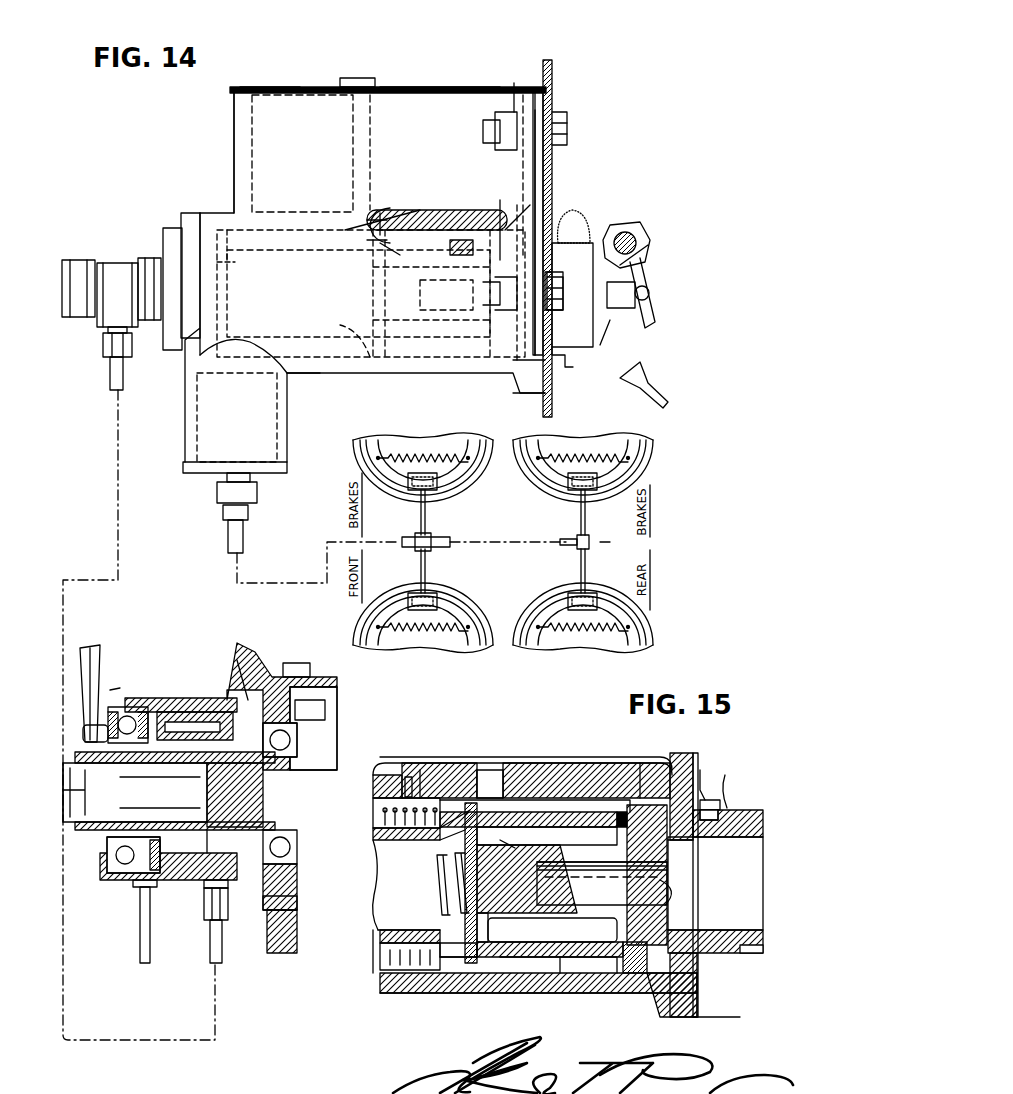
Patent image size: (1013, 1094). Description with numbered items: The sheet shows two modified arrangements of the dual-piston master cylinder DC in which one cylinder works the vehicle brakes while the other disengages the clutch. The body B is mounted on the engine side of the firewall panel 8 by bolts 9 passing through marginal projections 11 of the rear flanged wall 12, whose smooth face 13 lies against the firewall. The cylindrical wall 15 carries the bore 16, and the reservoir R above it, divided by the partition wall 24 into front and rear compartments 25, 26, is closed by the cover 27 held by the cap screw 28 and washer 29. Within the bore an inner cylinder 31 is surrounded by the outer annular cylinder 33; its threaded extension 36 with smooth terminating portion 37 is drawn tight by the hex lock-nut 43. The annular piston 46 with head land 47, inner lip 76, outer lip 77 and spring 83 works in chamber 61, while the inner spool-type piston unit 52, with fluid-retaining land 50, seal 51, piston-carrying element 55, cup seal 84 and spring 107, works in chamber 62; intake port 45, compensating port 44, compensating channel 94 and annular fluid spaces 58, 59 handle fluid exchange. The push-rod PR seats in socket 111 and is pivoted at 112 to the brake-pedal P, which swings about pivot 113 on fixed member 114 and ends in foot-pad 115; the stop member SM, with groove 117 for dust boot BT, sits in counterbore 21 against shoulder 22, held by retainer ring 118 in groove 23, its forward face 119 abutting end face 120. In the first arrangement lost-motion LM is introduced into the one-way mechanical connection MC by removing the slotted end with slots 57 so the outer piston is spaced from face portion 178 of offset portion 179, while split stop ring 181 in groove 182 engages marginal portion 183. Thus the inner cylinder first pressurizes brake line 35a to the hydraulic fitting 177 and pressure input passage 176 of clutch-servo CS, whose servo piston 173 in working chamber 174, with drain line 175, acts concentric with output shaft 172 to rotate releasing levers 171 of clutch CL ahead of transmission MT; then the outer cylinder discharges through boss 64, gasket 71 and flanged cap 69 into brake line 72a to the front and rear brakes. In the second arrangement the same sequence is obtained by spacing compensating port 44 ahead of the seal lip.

In FIG. 14, the fluid supply reservoir R is at (388, 221).
In FIG. 15, the fluid supply reservoir R is at (597, 755).
In FIG. 14, the removable cover 27 is at (272, 72).
In FIG. 14, the cap screw 28 is at (352, 78).
In FIG. 14, the washer 29 is at (395, 80).
In FIG. 14, the body B is at (233, 158).
In FIG. 15, the body B is at (388, 1012).
In FIG. 14, the firewall panel 8 is at (552, 72).
In FIG. 14, the marginal projections 11 is at (508, 110).
In FIG. 14, the bolts 9 is at (567, 125).
In FIG. 14, the smooth face 13 is at (552, 135).
In FIG. 15, the smooth face 13 is at (698, 1010).
In FIG. 14, the rear flanged wall 12 is at (538, 160).
In FIG. 15, the rear flanged wall 12 is at (700, 760).
In FIG. 14, the dual-piston master cylinder DC is at (440, 376).
In FIG. 15, the dual-piston master cylinder DC is at (349, 997).
In FIG. 14, the intake port 45 is at (425, 210).
In FIG. 15, the intake port 45 is at (490, 775).
In FIG. 14, the inner spool-type piston unit 52 is at (458, 240).
In FIG. 15, the inner spool-type piston unit 52 is at (527, 879).
In FIG. 14, the internal annular groove 182 is at (393, 215).
In FIG. 14, the lost-motion LM is at (480, 240).
In FIG. 14, the annular face portion 178 is at (505, 240).
In FIG. 14, the fluid-retaining land 50 is at (520, 255).
In FIG. 15, the fluid-retaining land 50 is at (690, 897).
In FIG. 14, the peripheral marginal portion 183 is at (385, 240).
In FIG. 14, the annular piston 46 is at (385, 260).
In FIG. 15, the annular piston 46 is at (510, 833).
In FIG. 14, the split stop ring 181 is at (399, 273).
In FIG. 14, the offset cylindrical portion 179 is at (446, 295).
In FIG. 14, the cylindrical wall 15 is at (310, 385).
In FIG. 15, the cylindrical wall 15 is at (445, 993).
In FIG. 14, the piston-carrying element 55 is at (370, 395).
In FIG. 15, the piston-carrying element 55 is at (552, 930).
In FIG. 14, the dust boot BT is at (580, 215).
In FIG. 14, the push-rod PR is at (588, 320).
In FIG. 14, the stop member SM is at (600, 235).
In FIG. 15, the stop member SM is at (735, 773).
In FIG. 14, the fixed member 114 is at (632, 240).
In FIG. 14, the pivot 113 is at (638, 242).
In FIG. 14, the pivotal connection 112 is at (650, 293).
In FIG. 14, the brake-pedal P is at (610, 318).
In FIG. 14, the external annular groove 117 is at (574, 366).
In FIG. 15, the external annular groove 117 is at (714, 782).
In FIG. 14, the foot-pad 115 is at (652, 378).
In FIG. 14, the threaded coaxial extension 36 is at (146, 256).
In FIG. 14, the smooth terminating portion 37 is at (170, 320).
In FIG. 14, the hex lock-nut 43 is at (185, 350).
In FIG. 14, the brake line 35a is at (108, 375).
In FIG. 14, the cylindrical boss 64 is at (183, 425).
In FIG. 14, the gasket 71 is at (185, 470).
In FIG. 14, the hexagonal flanged cap 69 is at (220, 475).
In FIG. 14, the brake line 72a is at (228, 538).
In FIG. 14, the master friction clutch CL is at (131, 660).
In FIG. 14, the releasing levers 171 is at (100, 648).
In FIG. 14, the manual-shift transmission MT is at (322, 722).
In FIG. 14, the annular working chamber 174 is at (238, 690).
In FIG. 14, the output shaft 172 is at (63, 822).
In FIG. 14, the servo piston 173 is at (120, 880).
In FIG. 14, the hydraulic clutch-servo CS is at (120, 900).
In FIG. 14, the drain line 175 is at (140, 955).
In FIG. 14, the hydraulic fitting 177 is at (204, 910).
In FIG. 14, the pressure input passage 176 is at (235, 890).
In FIG. 15, the partition wall 24 is at (470, 770).
In FIG. 15, the compensating port 44 is at (408, 777).
In FIG. 15, the front compartment 25 is at (430, 770).
In FIG. 15, the rear compartment 26 is at (640, 765).
In FIG. 15, the internal annular groove 23 is at (677, 755).
In FIG. 15, the working chamber 61 is at (373, 812).
In FIG. 15, the compression spring 83 is at (385, 826).
In FIG. 15, the working chamber 62 is at (375, 878).
In FIG. 15, the outer lip 77 is at (440, 835).
In FIG. 15, the bore 16 is at (445, 840).
In FIG. 15, the inner lip 76 is at (440, 855).
In FIG. 15, the compression spring 107 is at (448, 878).
In FIG. 15, the fluid compensating channel 94 is at (512, 857).
In FIG. 15, the one-way mechanical connection MC is at (648, 910).
In FIG. 15, the socket 111 is at (602, 874).
In FIG. 15, the cup seal 84 is at (497, 927).
In FIG. 15, the indented slots 57 is at (667, 845).
In FIG. 15, the counterbored portion 21 is at (720, 837).
In FIG. 15, the end face 120 is at (680, 845).
In FIG. 15, the forward face 119 is at (672, 912).
In FIG. 15, the split retainer ring 118 is at (697, 960).
In FIG. 15, the internal annular shoulder 22 is at (697, 985).
In FIG. 15, the outer annular cylinder 33 is at (380, 980).
In FIG. 15, the inner cylinder 31 is at (380, 955).
In FIG. 15, the annular head land 47 is at (465, 993).
In FIG. 15, the annular fluid space 59 is at (545, 990).
In FIG. 15, the annular fluid space 58 is at (590, 985).
In FIG. 15, the single-lip fluid-retaining seal 51 is at (645, 985).